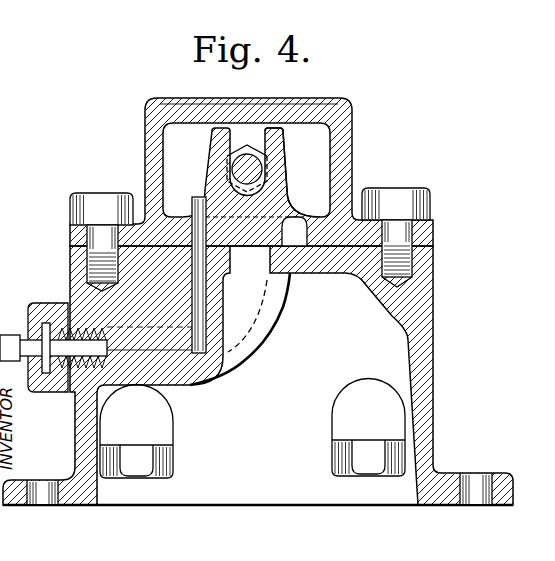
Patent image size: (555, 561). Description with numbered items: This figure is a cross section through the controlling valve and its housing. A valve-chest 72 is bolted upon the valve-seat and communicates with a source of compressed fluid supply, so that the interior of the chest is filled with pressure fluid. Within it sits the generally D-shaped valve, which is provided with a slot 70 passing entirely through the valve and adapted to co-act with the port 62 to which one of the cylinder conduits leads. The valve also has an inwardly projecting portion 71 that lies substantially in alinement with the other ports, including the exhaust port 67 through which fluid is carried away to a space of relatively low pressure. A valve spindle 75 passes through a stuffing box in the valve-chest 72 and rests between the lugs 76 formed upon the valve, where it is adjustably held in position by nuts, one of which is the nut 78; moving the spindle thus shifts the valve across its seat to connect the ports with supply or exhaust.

The port 62 is at (203, 338).
The exhaust port 67 is at (289, 294).
The slot 70 is at (173, 203).
The inwardly projecting portion 71 is at (265, 227).
The valve-chest 72 is at (316, 159).
The valve spindle 75 is at (240, 170).
The lugs 76 is at (274, 146).
The nut 78 is at (243, 150).